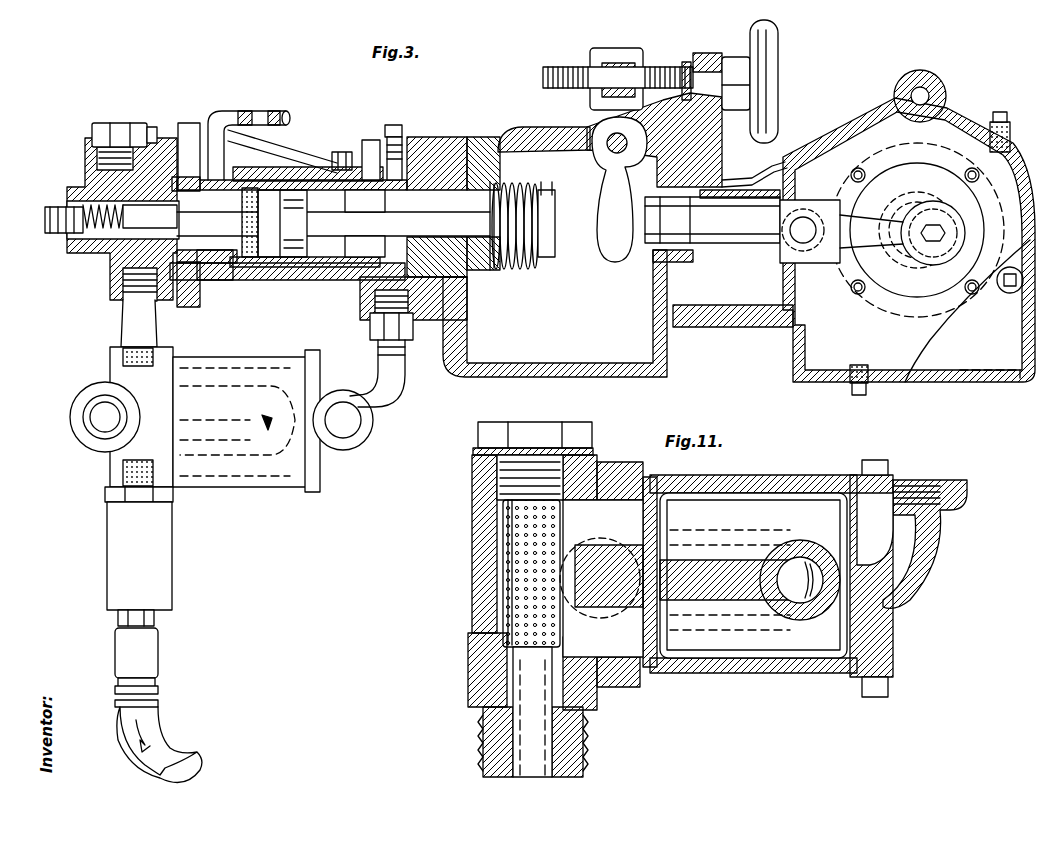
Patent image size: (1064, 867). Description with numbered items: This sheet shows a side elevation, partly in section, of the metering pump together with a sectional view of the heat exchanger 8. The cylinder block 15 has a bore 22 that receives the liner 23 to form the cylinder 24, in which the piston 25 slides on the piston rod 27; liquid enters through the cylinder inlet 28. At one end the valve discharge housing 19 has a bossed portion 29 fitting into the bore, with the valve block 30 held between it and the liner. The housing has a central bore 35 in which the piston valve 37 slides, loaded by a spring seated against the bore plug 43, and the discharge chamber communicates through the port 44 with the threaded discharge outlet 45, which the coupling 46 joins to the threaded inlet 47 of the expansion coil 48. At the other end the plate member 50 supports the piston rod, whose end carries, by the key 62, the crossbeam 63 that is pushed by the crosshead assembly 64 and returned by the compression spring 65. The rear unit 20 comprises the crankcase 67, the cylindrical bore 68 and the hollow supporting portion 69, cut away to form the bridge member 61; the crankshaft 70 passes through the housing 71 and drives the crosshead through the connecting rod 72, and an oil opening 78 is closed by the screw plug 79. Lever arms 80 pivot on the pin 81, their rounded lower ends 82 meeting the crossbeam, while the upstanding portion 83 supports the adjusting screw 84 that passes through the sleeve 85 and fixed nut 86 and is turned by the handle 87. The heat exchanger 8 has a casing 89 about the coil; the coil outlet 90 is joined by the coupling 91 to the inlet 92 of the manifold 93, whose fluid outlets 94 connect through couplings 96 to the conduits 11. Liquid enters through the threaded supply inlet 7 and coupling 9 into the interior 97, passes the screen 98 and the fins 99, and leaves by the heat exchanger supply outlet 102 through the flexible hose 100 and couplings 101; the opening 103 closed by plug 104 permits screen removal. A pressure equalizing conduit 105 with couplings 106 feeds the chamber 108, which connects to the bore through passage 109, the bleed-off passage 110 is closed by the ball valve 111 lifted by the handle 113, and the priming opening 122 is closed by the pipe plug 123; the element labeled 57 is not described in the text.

In FIG. 3, the threaded supply inlet 7 is at (88, 427).
In FIG. 11, the threaded supply inlet 7 is at (583, 708).
In FIG. 3, the heat exchanger 8 is at (108, 373).
In FIG. 11, the heat exchanger 8 is at (468, 618).
In FIG. 11, the coupling 9 is at (562, 750).
In FIG. 3, the conduits 11 is at (152, 724).
In FIG. 3, the cylinder block 15 is at (275, 158).
In FIG. 3, the valve discharge housing 19 is at (62, 243).
In FIG. 3, the rear unit 20 is at (517, 128).
In FIG. 3, the bore 22 is at (368, 160).
In FIG. 3, the liner 23 is at (328, 252).
In FIG. 3, the cylinder 24 is at (327, 270).
In FIG. 3, the piston 25 is at (273, 260).
In FIG. 3, the piston rod 27 is at (388, 228).
In FIG. 3, the cylinder inlet 28 is at (393, 283).
In FIG. 3, the bossed portion 29 is at (185, 300).
In FIG. 3, the valve block 30 is at (215, 262).
In FIG. 3, the central bore 35 is at (70, 196).
In FIG. 3, the piston valve 37 is at (143, 178).
In FIG. 3, the bore plug 43 is at (50, 222).
In FIG. 3, the port 44 is at (150, 250).
In FIG. 3, the threaded discharge outlet 45 is at (148, 254).
In FIG. 3, the coupling 46 is at (135, 316).
In FIG. 3, the threaded inlet 47 is at (120, 347).
In FIG. 3, the expansion coil 48 is at (240, 397).
In FIG. 11, the expansion coil 48 is at (783, 613).
In FIG. 3, the plate member 50 is at (443, 145).
In FIG. 3, the pin 57 is at (232, 178).
In FIG. 3, the bridge member 61 is at (493, 143).
In FIG. 3, the key 62 is at (567, 176).
In FIG. 3, the crossbeam 63 is at (553, 258).
In FIG. 3, the crosshead assembly 64 is at (698, 245).
In FIG. 3, the compression spring 65 is at (504, 272).
In FIG. 3, the crankcase 67 is at (822, 145).
In FIG. 3, the cylindrical bore 68 is at (735, 260).
In FIG. 3, the hollow supporting portion 69 is at (598, 352).
In FIG. 3, the crankshaft 70 is at (915, 207).
In FIG. 3, the housing 71 is at (943, 207).
In FIG. 3, the connecting rod 72 is at (868, 253).
In FIG. 3, the opening 78 is at (1012, 133).
In FIG. 3, the screw plug 79 is at (997, 124).
In FIG. 3, the lever arms 80 is at (600, 100).
In FIG. 3, the pin 81 is at (598, 127).
In FIG. 3, the rounded lower ends 82 is at (617, 262).
In FIG. 3, the upstanding portion 83 is at (708, 53).
In FIG. 3, the adjusting screw 84 is at (562, 68).
In FIG. 3, the sleeve 85 is at (612, 62).
In FIG. 3, the fixed nut 86 is at (683, 68).
In FIG. 3, the handle 87 is at (764, 60).
In FIG. 3, the casing 89 is at (232, 362).
In FIG. 11, the casing 89 is at (710, 673).
In FIG. 3, the outlet 90 is at (110, 478).
In FIG. 3, the coupling 91 is at (108, 497).
In FIG. 3, the inlet 92 is at (150, 506).
In FIG. 3, the manifold 93 is at (160, 577).
In FIG. 3, the fluid outlets 94 is at (157, 612).
In FIG. 3, the couplings 96 is at (160, 659).
In FIG. 11, the interior 97 is at (503, 540).
In FIG. 11, the screen 98 is at (512, 583).
In FIG. 3, the fins 99 is at (281, 488).
In FIG. 11, the fins 99 is at (788, 510).
In FIG. 3, the flexible hose 100 is at (393, 402).
In FIG. 3, the couplings 101 is at (408, 348).
In FIG. 3, the heat exchanger supply outlet 102 is at (370, 428).
In FIG. 11, the heat exchanger supply outlet 102 is at (927, 482).
In FIG. 11, the opening 103 is at (500, 488).
In FIG. 11, the plug 104 is at (545, 452).
In FIG. 3, the pressure equalizing conduit 105 is at (187, 127).
In FIG. 3, the couplings 106 is at (150, 130).
In FIG. 3, the chamber 108 is at (145, 210).
In FIG. 3, the passage 109 is at (105, 197).
In FIG. 3, the bleed-off passage 110 is at (195, 180).
In FIG. 3, the ball valve 111 is at (205, 280).
In FIG. 3, the handle 113 is at (262, 116).
In FIG. 3, the opening 122 is at (410, 147).
In FIG. 3, the pipe plug 123 is at (388, 147).